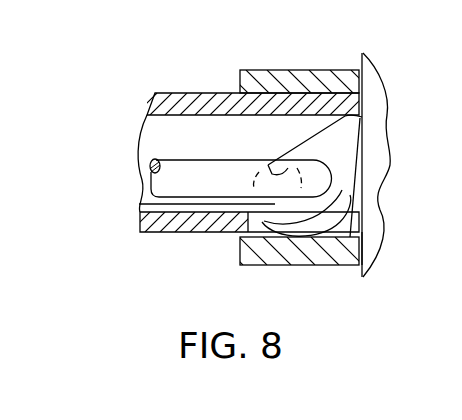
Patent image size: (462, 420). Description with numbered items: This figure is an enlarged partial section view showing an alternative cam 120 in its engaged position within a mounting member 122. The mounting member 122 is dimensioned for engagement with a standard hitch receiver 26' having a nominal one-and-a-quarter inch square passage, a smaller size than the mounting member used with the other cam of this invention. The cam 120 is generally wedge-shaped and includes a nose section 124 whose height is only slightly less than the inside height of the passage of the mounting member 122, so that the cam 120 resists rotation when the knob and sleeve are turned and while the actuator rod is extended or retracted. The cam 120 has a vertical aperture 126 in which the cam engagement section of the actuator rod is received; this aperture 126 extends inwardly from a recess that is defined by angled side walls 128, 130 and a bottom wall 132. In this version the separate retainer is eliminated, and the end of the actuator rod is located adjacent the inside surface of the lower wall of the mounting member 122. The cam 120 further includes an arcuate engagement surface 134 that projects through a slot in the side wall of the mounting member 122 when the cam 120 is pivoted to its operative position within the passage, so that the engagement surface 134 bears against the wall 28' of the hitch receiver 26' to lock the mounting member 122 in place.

The hitch receiver 26' is at (299, 52).
The wall 28' is at (289, 256).
The cam 120 is at (312, 126).
The mounting member 122 is at (153, 235).
The nose section 124 is at (360, 113).
The vertical aperture 126 is at (300, 164).
The angled side wall 128 is at (268, 165).
The angled side wall 130 is at (307, 210).
The bottom wall 132 is at (255, 205).
The arcuate engagement surface 134 is at (362, 246).